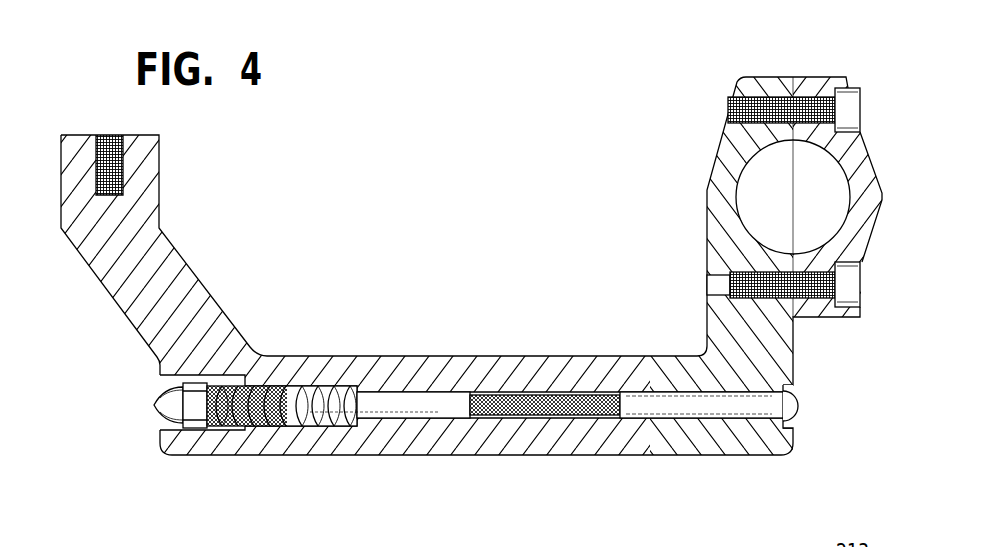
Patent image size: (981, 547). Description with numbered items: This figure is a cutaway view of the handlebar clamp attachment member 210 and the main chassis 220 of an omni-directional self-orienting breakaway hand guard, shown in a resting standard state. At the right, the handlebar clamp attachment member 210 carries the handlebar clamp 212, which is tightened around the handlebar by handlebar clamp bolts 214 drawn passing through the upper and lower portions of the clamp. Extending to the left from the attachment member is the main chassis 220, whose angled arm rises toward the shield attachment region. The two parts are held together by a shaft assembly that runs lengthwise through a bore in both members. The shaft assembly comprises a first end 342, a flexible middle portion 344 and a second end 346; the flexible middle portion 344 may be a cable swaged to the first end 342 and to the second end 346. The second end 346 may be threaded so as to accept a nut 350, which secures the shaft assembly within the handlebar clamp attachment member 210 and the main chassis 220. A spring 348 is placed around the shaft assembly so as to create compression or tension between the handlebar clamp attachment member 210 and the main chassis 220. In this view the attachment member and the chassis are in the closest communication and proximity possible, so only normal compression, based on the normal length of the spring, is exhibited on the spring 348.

The handlebar clamp attachment member 210 is at (778, 372).
The handlebar clamp 212 is at (857, 235).
The handlebar clamp bolt 214 is at (845, 88).
The main chassis 220 is at (190, 287).
The first end 342 is at (683, 406).
The flexible middle portion 344 is at (522, 416).
The second end 346 is at (383, 408).
The spring 348 is at (227, 422).
The nut 350 is at (167, 396).